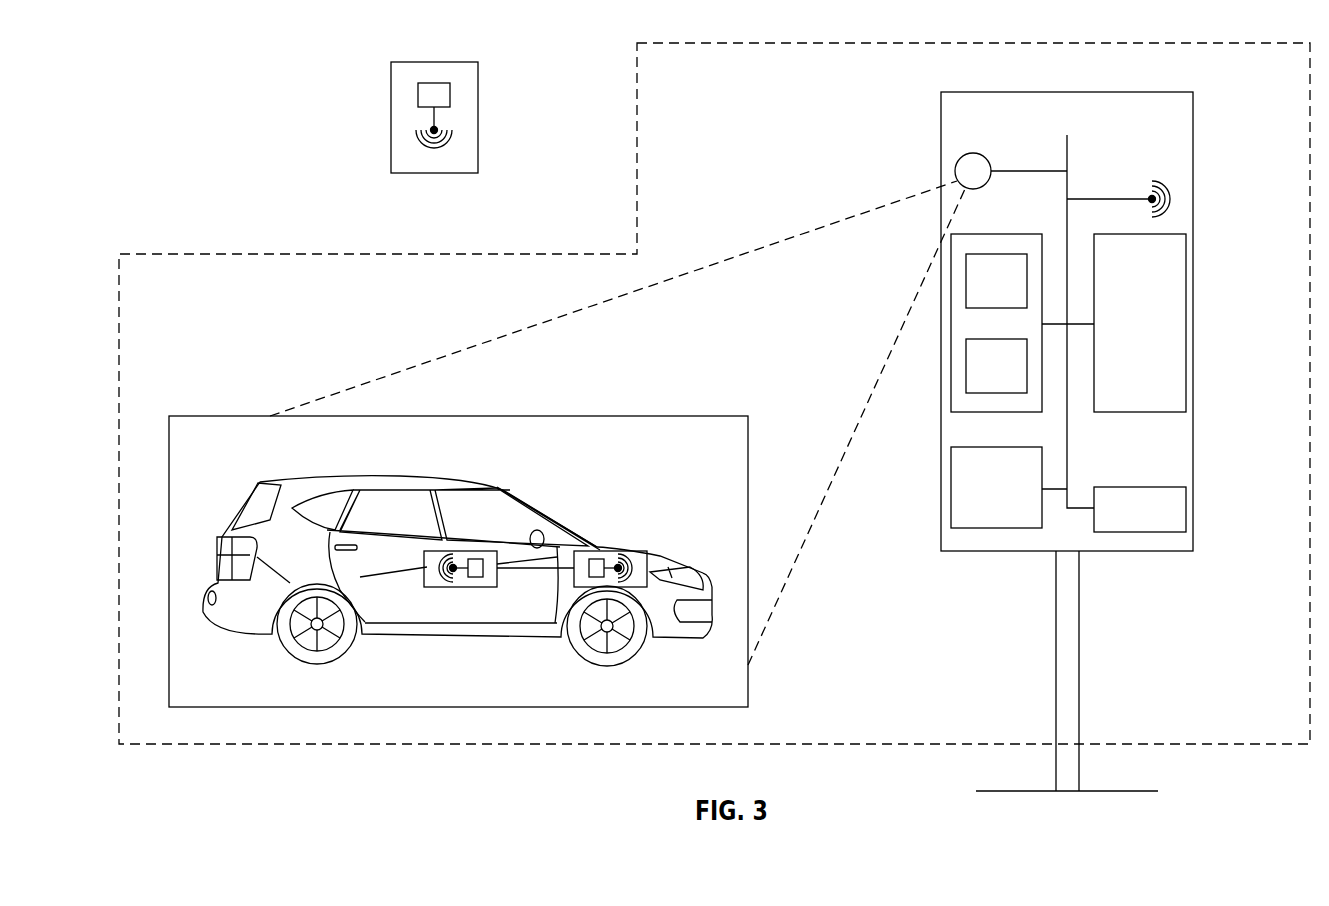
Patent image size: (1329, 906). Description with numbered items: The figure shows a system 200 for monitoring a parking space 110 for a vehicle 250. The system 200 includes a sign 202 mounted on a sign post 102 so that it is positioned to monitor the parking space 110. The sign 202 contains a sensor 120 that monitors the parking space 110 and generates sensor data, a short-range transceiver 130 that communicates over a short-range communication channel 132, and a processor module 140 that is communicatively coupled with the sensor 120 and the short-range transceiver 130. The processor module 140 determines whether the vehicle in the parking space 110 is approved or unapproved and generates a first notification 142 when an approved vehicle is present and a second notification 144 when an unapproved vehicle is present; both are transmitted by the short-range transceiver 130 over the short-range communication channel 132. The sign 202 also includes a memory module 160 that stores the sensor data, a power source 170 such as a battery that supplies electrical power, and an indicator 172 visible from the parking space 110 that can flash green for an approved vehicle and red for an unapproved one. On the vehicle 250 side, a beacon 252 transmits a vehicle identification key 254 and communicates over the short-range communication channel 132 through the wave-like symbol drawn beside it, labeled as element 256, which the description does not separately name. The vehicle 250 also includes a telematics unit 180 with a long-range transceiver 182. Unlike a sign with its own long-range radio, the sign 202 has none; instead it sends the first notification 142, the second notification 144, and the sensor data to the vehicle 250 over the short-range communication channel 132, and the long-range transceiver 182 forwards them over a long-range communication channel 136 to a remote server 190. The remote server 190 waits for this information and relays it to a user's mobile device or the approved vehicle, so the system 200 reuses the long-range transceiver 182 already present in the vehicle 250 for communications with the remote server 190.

The system for monitoring a parking space 200 is at (652, 38).
The remote server 190 is at (451, 130).
The long-range communication channel 136 is at (422, 148).
The sign 202 is at (1050, 318).
The sensor 120 is at (966, 155).
The short-range transceiver 130 is at (1158, 192).
The short-range communication channel 132 is at (1178, 200).
The processor module 140 is at (943, 347).
The first notification 142 is at (966, 270).
The second notification 144 is at (966, 350).
The memory module 160 is at (958, 528).
The power source 170 is at (1178, 412).
The indicator 172 is at (1178, 532).
The sign post 102 is at (1080, 638).
The parking space 110 is at (213, 416).
The vehicle 250 is at (457, 516).
The telematics unit 180 is at (463, 509).
The long-range transceiver 182 is at (441, 558).
The beacon 252 is at (621, 528).
The vehicle identification key 254 is at (594, 551).
The front antenna 256 is at (628, 566).